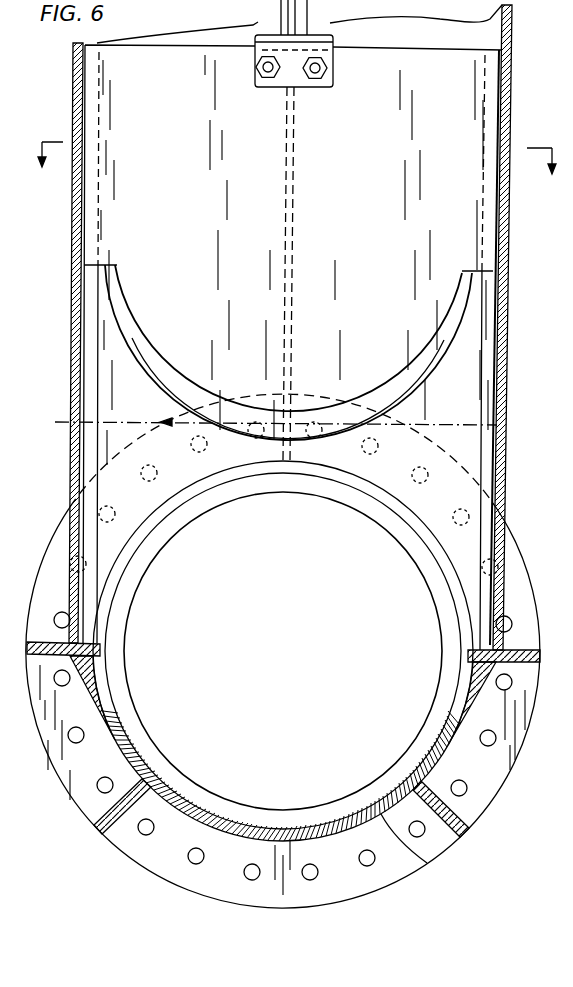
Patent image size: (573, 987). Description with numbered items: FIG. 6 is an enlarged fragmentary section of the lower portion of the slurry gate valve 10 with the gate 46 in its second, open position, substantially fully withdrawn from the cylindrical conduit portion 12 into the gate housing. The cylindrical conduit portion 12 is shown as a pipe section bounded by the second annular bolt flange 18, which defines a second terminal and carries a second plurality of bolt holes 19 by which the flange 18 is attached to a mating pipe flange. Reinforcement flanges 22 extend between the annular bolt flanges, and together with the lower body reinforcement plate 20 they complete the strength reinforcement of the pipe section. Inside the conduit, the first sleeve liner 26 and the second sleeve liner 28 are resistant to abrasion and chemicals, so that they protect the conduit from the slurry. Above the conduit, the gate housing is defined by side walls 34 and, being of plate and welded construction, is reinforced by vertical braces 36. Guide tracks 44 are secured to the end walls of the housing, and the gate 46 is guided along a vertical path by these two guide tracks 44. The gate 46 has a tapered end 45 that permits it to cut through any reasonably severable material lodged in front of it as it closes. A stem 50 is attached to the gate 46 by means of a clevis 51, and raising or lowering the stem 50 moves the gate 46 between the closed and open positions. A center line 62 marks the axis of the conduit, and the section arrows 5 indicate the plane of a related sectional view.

The slurry gate valve 10 is at (314, 325).
The cylindrical conduit portion 12 is at (442, 553).
The second annular bolt flange 18 is at (494, 783).
The second plurality of bolt holes 19 is at (465, 792).
The lower body reinforcement plate 20 is at (425, 863).
The reinforcement flanges 22 is at (540, 676).
The first sleeve liner 26 is at (556, 775).
The second sleeve liner 28 is at (438, 582).
The side walls 34 is at (412, 28).
The vertical braces 36 is at (300, 132).
The guide tracks 44 is at (68, 404).
The tapered end 45 is at (417, 403).
The gate 46 is at (362, 275).
The stem 50 is at (308, 26).
The clevis 51 is at (265, 40).
The center line 62 is at (148, 420).
The section line FIG. 5 is at (295, 172).